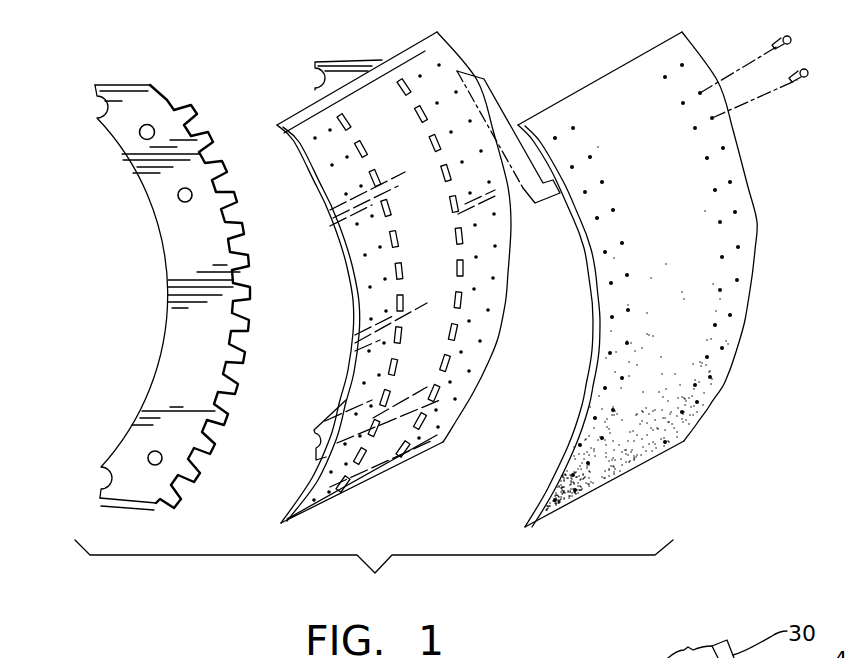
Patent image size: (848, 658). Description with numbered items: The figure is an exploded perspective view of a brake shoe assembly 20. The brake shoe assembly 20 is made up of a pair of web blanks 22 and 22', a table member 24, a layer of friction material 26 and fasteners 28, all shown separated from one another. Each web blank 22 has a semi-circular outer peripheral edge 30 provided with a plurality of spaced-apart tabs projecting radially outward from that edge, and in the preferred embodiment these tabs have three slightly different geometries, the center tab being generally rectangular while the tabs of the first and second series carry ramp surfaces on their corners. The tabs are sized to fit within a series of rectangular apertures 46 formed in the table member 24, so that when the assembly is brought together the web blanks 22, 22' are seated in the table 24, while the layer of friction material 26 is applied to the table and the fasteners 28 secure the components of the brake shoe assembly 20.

The brake shoe assembly 20 is at (374, 575).
The web blank 22 is at (148, 268).
The web blank 22' is at (327, 46).
The table member 24 is at (403, 47).
The layer of friction material 26 is at (633, 57).
The fasteners 28 is at (803, 82).
The semi-circular outer peripheral edge 30 is at (163, 503).
The rectangular apertures 46 is at (408, 89).